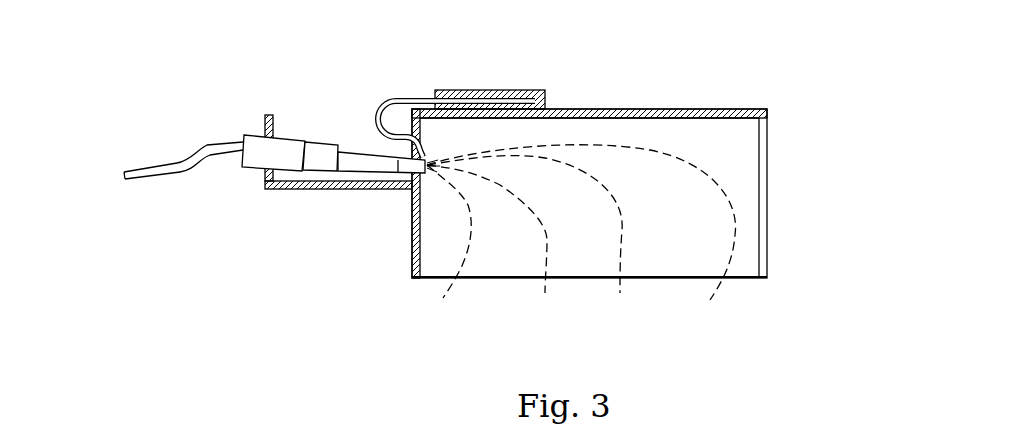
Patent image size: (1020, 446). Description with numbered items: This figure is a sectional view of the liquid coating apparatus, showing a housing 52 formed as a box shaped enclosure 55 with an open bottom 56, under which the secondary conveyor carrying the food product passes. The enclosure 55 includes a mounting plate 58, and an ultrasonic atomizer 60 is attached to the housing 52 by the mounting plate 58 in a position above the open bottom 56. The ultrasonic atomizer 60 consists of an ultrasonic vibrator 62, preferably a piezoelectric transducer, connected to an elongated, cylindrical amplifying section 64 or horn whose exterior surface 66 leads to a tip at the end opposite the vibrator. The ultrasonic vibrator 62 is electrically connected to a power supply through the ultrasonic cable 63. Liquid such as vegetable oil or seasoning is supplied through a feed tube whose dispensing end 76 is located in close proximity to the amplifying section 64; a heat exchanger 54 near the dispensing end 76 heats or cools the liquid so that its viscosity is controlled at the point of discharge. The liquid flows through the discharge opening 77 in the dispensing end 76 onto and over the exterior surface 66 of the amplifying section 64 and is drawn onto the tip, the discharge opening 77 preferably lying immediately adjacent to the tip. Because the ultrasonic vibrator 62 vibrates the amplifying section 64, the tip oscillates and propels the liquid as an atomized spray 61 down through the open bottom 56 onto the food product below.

The housing 52 is at (777, 178).
The heat exchanger 54 is at (549, 93).
The enclosure 55 is at (740, 110).
The open bottom 56 is at (670, 278).
The mounting plate 58 is at (315, 193).
The ultrasonic atomizer 60 is at (238, 170).
The atomized spray 61 is at (542, 254).
The ultrasonic vibrator 62 is at (252, 135).
The ultrasonic cable 63 is at (157, 160).
The amplifying section 64 is at (397, 168).
The exterior surface 66 is at (358, 152).
The dispensing end 76 is at (375, 103).
The discharge opening 77 is at (430, 150).